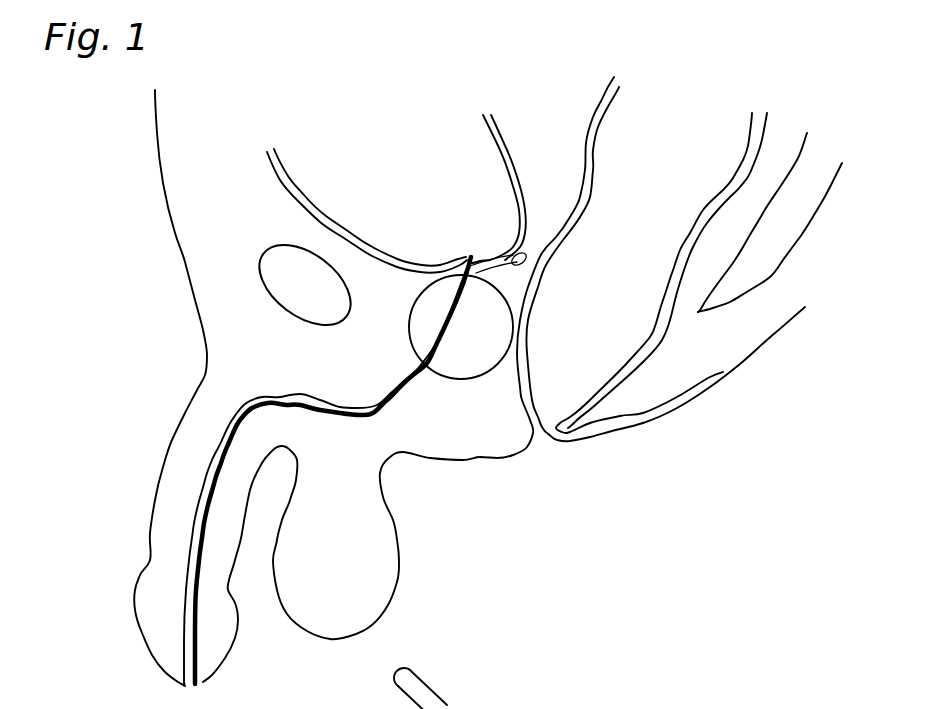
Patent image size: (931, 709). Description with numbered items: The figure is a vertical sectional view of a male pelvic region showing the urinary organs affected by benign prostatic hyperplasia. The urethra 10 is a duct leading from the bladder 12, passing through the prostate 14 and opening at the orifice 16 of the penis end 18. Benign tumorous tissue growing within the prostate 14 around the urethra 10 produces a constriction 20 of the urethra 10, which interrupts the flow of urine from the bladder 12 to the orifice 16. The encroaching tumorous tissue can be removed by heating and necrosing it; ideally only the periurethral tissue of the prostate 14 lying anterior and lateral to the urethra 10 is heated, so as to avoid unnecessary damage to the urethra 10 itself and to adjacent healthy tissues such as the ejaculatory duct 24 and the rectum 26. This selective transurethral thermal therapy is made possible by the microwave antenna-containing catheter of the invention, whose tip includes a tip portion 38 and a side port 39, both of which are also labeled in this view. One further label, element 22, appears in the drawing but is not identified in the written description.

The urethra 10 is at (237, 412).
The bladder 12 is at (337, 183).
The prostate 14 is at (466, 335).
The orifice 16 is at (189, 690).
The penis end 18 is at (147, 651).
The constriction 20 is at (457, 310).
The bladder neck 22 is at (467, 263).
The ejaculatory duct 24 is at (495, 294).
The rectum 26 is at (560, 368).
The tip portion 38 is at (430, 678).
The side port 39 is at (455, 707).